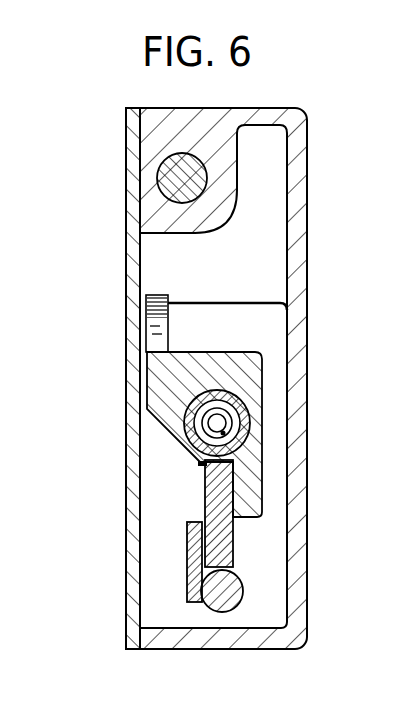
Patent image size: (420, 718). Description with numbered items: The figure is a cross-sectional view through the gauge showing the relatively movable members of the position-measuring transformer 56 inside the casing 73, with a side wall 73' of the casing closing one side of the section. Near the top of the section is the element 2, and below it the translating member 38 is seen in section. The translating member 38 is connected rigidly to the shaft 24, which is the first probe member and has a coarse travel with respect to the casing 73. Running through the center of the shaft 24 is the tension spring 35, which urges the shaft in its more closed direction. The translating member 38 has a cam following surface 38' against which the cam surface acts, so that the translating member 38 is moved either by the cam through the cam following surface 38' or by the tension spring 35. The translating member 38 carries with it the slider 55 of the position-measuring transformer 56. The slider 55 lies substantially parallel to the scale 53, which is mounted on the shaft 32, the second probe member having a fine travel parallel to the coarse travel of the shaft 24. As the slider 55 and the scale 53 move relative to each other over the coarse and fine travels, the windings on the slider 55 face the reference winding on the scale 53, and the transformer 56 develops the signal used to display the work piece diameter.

The shaft / rod 2 is at (183, 173).
The casing 73 is at (248, 378).
The housing side wall 73' is at (107, 378).
The cam following surface 38' is at (179, 323).
The translating member 38 is at (167, 434).
The tension spring 35 is at (232, 422).
The shaft 24 is at (190, 438).
The position-measuring transformer 56 is at (197, 501).
The slider 55 is at (235, 546).
The scale 53 is at (197, 548).
The shaft 32 is at (225, 596).